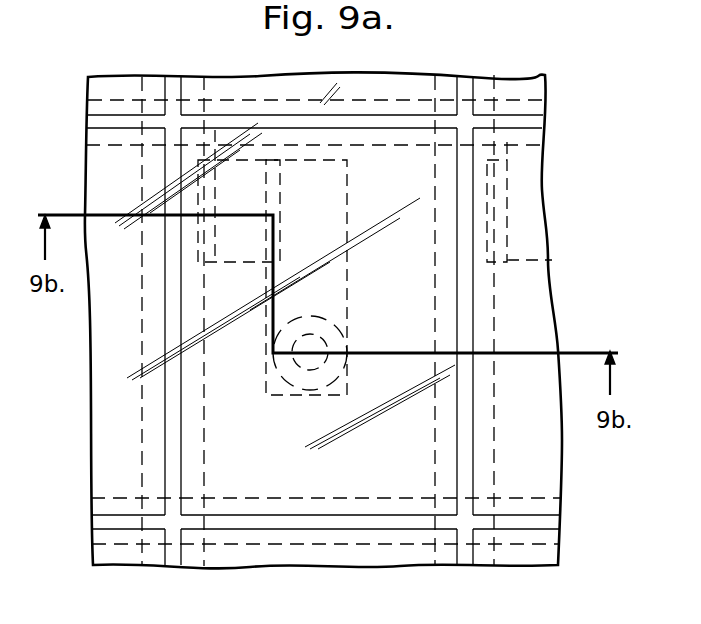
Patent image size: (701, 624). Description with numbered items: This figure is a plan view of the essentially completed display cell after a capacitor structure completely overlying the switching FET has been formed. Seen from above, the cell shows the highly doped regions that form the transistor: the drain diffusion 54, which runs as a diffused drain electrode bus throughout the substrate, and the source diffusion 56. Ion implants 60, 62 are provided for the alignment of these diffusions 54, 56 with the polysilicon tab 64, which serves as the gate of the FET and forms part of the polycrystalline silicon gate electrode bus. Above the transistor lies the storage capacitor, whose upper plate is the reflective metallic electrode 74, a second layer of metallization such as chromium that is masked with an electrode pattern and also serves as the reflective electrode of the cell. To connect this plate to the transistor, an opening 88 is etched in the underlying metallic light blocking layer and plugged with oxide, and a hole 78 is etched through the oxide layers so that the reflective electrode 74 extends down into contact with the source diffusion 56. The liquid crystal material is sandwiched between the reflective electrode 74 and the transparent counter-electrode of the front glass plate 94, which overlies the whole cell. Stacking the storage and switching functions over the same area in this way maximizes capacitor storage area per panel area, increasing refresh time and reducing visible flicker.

The drain diffusion 54 is at (147, 290).
The source diffusion 56 is at (352, 192).
The ion implant 60 is at (210, 266).
The ion implant 62 is at (271, 234).
The polysilicon tab 64 is at (545, 240).
The reflective metallic electrode 74 is at (235, 505).
The hole 78 is at (292, 387).
The opening 88 is at (330, 315).
The front glass plate 94 is at (100, 463).